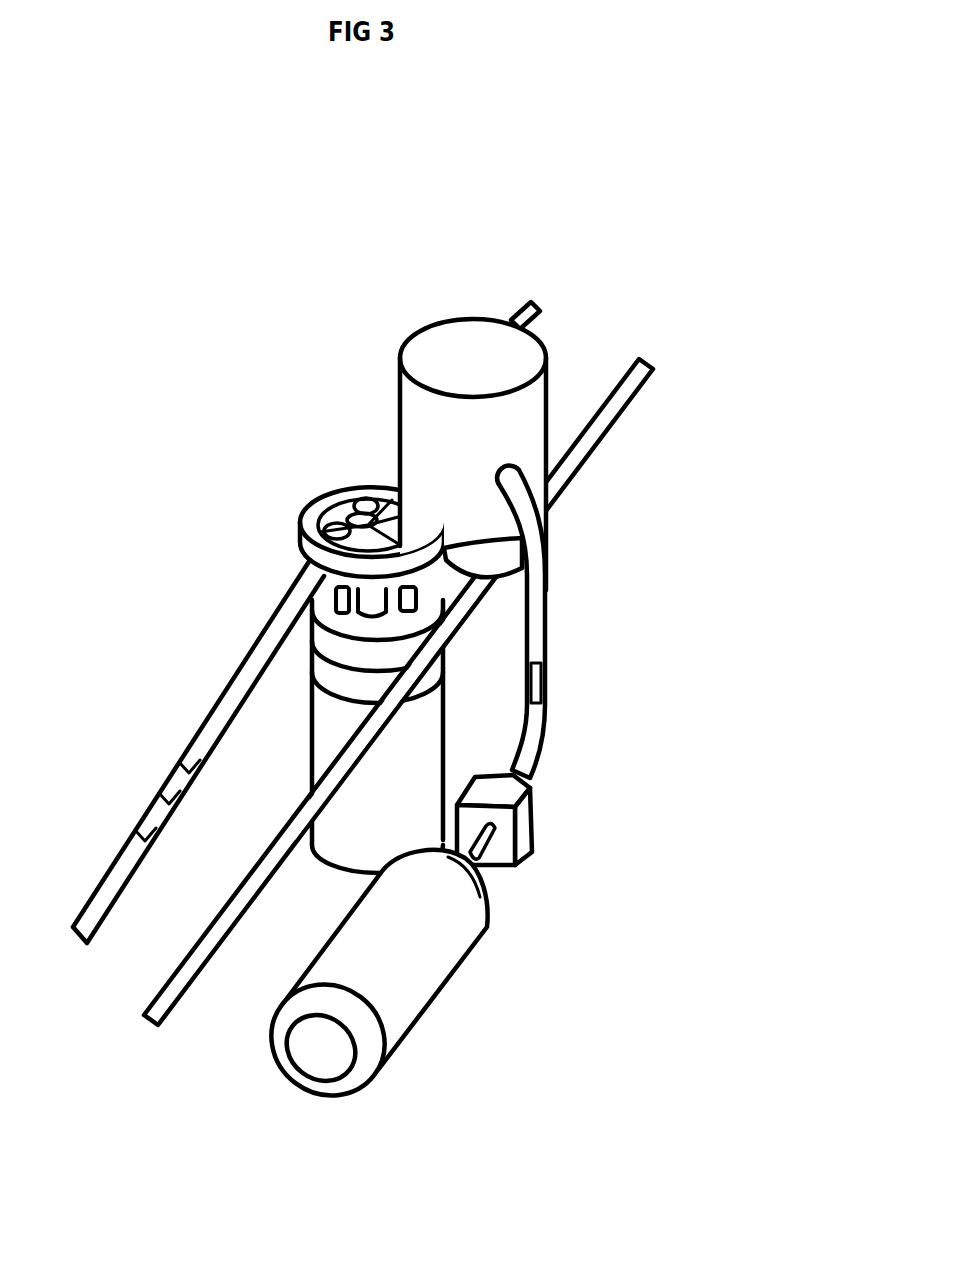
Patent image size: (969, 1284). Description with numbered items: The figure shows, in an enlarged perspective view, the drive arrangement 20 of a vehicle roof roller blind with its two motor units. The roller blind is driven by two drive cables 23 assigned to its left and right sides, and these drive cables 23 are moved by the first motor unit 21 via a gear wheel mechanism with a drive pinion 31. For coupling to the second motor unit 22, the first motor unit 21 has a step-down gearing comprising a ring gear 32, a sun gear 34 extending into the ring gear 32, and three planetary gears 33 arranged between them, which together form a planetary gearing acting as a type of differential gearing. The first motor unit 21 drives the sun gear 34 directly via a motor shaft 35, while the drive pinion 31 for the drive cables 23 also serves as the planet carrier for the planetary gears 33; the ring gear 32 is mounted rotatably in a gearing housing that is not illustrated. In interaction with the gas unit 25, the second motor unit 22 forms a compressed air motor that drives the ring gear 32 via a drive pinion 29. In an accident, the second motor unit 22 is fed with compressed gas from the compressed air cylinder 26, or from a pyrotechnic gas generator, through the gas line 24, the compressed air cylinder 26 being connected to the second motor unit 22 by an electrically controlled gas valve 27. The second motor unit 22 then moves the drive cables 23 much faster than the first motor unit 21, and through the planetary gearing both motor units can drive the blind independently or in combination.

The assembly 20 is at (400, 673).
The first motor unit 21 is at (405, 763).
The second motor unit 22 is at (493, 433).
The drive cables 23 is at (122, 857).
The gas line 24 is at (532, 728).
The gas unit 25 is at (461, 965).
The compressed air cylinder 26 is at (413, 983).
The gas valve 27 is at (525, 818).
The drive pinion 29 is at (483, 570).
The drive pinion 31 is at (405, 647).
The ring gear 32 is at (318, 562).
The planetary gears 33 is at (372, 503).
The sun gear 34 is at (375, 523).
The motor shaft 35 is at (377, 597).